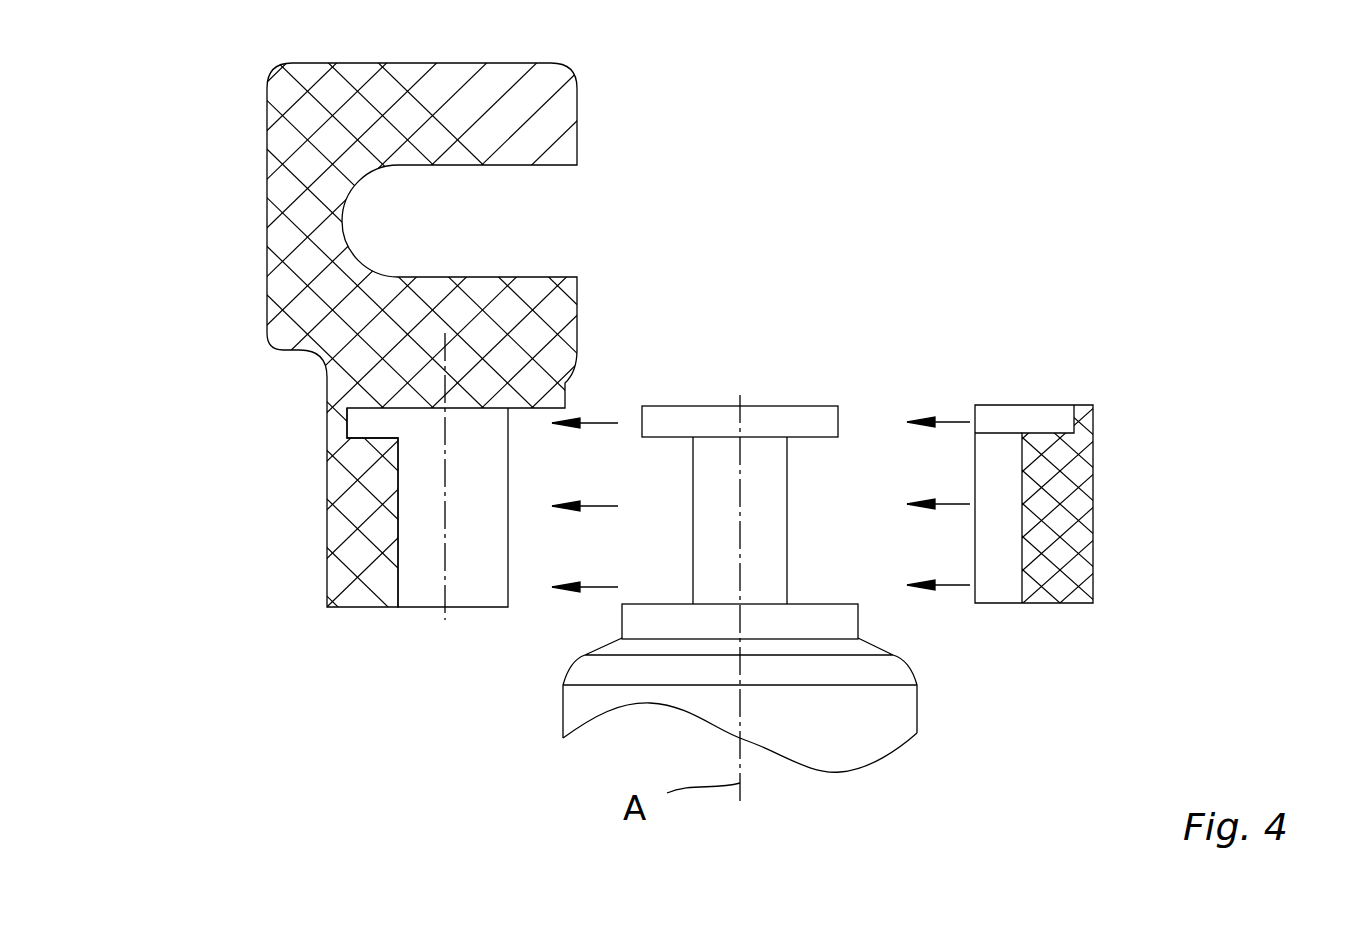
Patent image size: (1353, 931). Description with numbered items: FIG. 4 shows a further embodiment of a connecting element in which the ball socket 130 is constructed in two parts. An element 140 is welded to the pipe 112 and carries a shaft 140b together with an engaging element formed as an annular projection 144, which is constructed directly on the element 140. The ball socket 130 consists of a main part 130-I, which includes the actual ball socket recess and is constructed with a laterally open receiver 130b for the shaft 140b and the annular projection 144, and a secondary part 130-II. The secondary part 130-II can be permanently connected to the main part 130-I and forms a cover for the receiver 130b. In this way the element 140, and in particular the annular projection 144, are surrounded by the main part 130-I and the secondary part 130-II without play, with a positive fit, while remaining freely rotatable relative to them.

The ball socket 130 is at (677, 465).
The main part 130-I is at (283, 333).
The secondary part 130-II is at (1247, 436).
The receiver 130b is at (425, 592).
The annular projection 144 is at (823, 423).
The shaft 140b is at (773, 537).
The element 140 is at (798, 486).
The pipe 112 is at (890, 735).